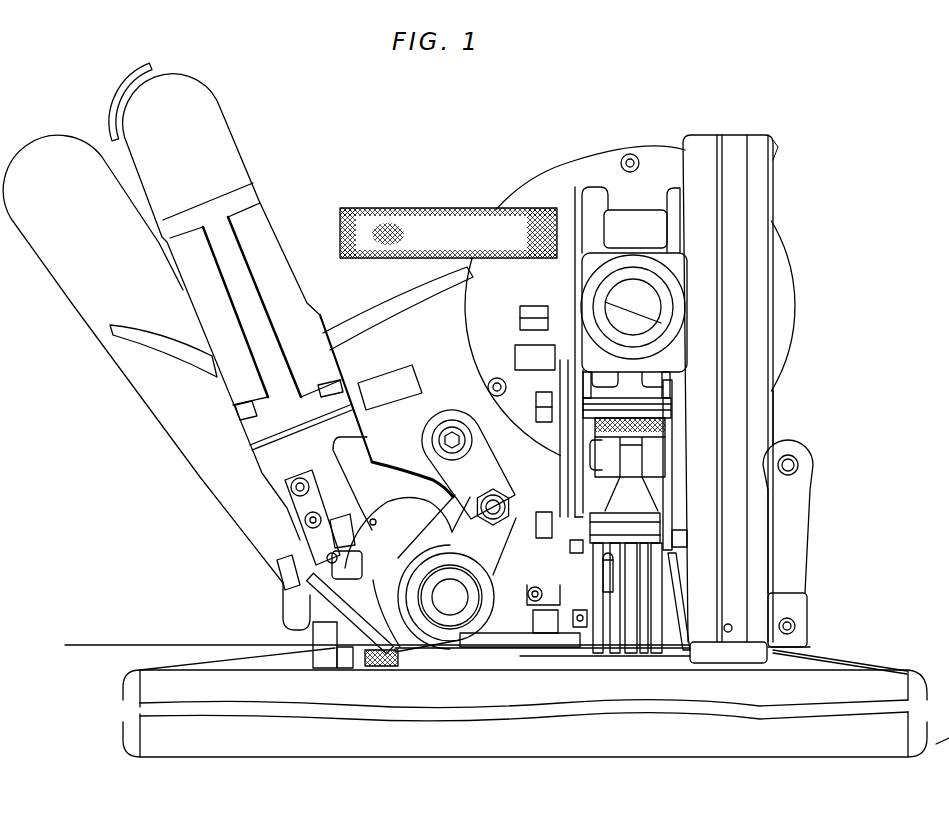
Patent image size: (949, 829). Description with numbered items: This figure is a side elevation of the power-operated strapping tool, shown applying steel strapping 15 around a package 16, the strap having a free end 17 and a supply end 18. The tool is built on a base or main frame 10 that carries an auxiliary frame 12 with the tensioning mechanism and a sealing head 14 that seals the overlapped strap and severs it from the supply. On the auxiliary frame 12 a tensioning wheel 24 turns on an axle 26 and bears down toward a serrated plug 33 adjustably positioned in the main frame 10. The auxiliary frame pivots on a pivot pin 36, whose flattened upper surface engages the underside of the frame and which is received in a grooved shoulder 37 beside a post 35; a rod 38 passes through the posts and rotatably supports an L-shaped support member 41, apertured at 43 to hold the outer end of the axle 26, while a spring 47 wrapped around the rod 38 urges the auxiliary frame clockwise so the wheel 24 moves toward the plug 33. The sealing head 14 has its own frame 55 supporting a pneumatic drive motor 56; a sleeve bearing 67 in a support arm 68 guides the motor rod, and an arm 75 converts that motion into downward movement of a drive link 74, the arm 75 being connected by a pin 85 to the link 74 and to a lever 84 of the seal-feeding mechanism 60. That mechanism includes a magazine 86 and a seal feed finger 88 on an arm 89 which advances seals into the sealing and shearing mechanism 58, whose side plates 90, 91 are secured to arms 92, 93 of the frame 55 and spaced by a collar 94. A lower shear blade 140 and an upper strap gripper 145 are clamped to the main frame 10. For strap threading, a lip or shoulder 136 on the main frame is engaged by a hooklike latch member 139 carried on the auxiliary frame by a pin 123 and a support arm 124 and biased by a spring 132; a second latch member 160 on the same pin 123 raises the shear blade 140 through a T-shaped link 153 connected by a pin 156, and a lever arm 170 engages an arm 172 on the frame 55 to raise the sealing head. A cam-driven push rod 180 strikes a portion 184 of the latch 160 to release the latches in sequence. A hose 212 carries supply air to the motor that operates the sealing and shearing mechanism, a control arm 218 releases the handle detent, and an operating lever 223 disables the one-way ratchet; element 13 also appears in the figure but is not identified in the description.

The main frame 10 is at (720, 663).
The auxiliary frame 12 is at (371, 441).
The leaf element 13 is at (607, 655).
The sealing head 14 is at (639, 150).
The steel strapping 15 is at (627, 655).
The package 16 is at (790, 745).
The free end 17 is at (772, 661).
The supply end 18 is at (66, 645).
The tensioning wheel 24 is at (483, 638).
The axle 26 is at (440, 609).
The serrated plug 33 is at (455, 664).
The post 35 is at (405, 550).
The pivot pin 36 is at (344, 657).
The grooved shoulder 37 is at (388, 668).
The rod 38 is at (489, 511).
The L-shaped support member 41 is at (462, 479).
The aperture 43 is at (451, 580).
The spring 47 is at (510, 481).
The frame 55 is at (575, 286).
The pneumatic drive motor 56 is at (796, 279).
The sealing and shearing mechanism 58 is at (676, 585).
The seal-feeding mechanism 60 is at (807, 615).
The sleeve bearing 67 is at (622, 308).
The support arm 68 is at (605, 261).
The drive link 74 is at (618, 507).
The arm 75 is at (612, 483).
The lever 84 is at (674, 430).
The pin 85 is at (599, 453).
The magazine 86 is at (762, 422).
The seal feed finger 88 is at (810, 648).
The arm 89 is at (783, 532).
The side plate 90 is at (588, 530).
The side plate 91 is at (678, 555).
The arm 92 is at (574, 479).
The arm 93 is at (674, 479).
The collar 94 is at (616, 538).
The pin 123 is at (334, 579).
The support arm 124 is at (310, 491).
The spring 132 is at (300, 579).
The lip or shoulder 136 is at (313, 656).
The hooklike latch member 139 is at (287, 623).
The lower shear blade 140 is at (529, 657).
The upper strap gripper 145 is at (534, 631).
The T-shaped link 153 is at (528, 607).
The pin 156 is at (530, 591).
The latch member 160 is at (330, 604).
The lever arm 170 is at (560, 592).
The arm 172 is at (560, 569).
The push rod 180 is at (345, 524).
The portion 184 is at (352, 536).
The hose 212 is at (388, 319).
The control arm 218 is at (119, 113).
The operating lever 223 is at (412, 368).